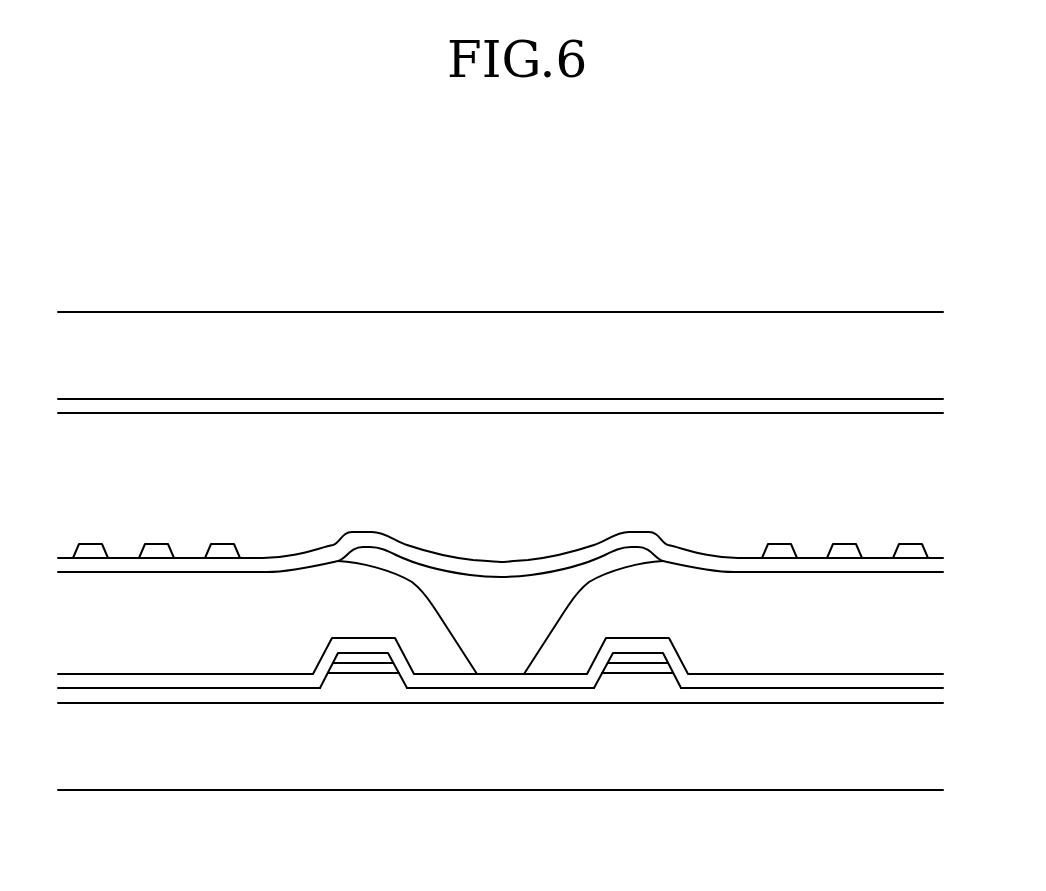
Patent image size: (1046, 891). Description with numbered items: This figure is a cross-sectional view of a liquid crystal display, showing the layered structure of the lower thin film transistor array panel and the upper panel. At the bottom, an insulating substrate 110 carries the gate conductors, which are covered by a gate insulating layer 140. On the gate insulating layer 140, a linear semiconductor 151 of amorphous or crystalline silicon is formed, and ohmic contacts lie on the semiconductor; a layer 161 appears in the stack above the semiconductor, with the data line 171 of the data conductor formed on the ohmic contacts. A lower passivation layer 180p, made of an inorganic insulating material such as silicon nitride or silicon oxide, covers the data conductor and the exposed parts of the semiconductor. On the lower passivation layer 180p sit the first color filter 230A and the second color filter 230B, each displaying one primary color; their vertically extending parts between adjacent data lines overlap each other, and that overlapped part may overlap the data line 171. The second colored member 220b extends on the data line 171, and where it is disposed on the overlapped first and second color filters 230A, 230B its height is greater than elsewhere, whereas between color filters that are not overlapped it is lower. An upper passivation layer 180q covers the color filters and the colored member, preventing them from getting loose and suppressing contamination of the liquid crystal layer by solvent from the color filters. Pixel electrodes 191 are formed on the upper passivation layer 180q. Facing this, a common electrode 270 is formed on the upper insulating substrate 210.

The insulating substrate 110 is at (223, 768).
The gate insulating layer 140 is at (508, 692).
The linear semiconductor 151 is at (337, 682).
The ohmic contact layer 161 is at (360, 672).
The data line 171 is at (377, 660).
The lower passivation layer 180p is at (870, 682).
The upper passivation layer 180q is at (732, 565).
The pixel electrode 191 is at (220, 552).
The insulating substrate 210 is at (385, 333).
The second colored member 220b is at (500, 600).
The first color filter 230A is at (135, 640).
The second color filter 230B is at (772, 640).
The common electrode 270 is at (510, 407).